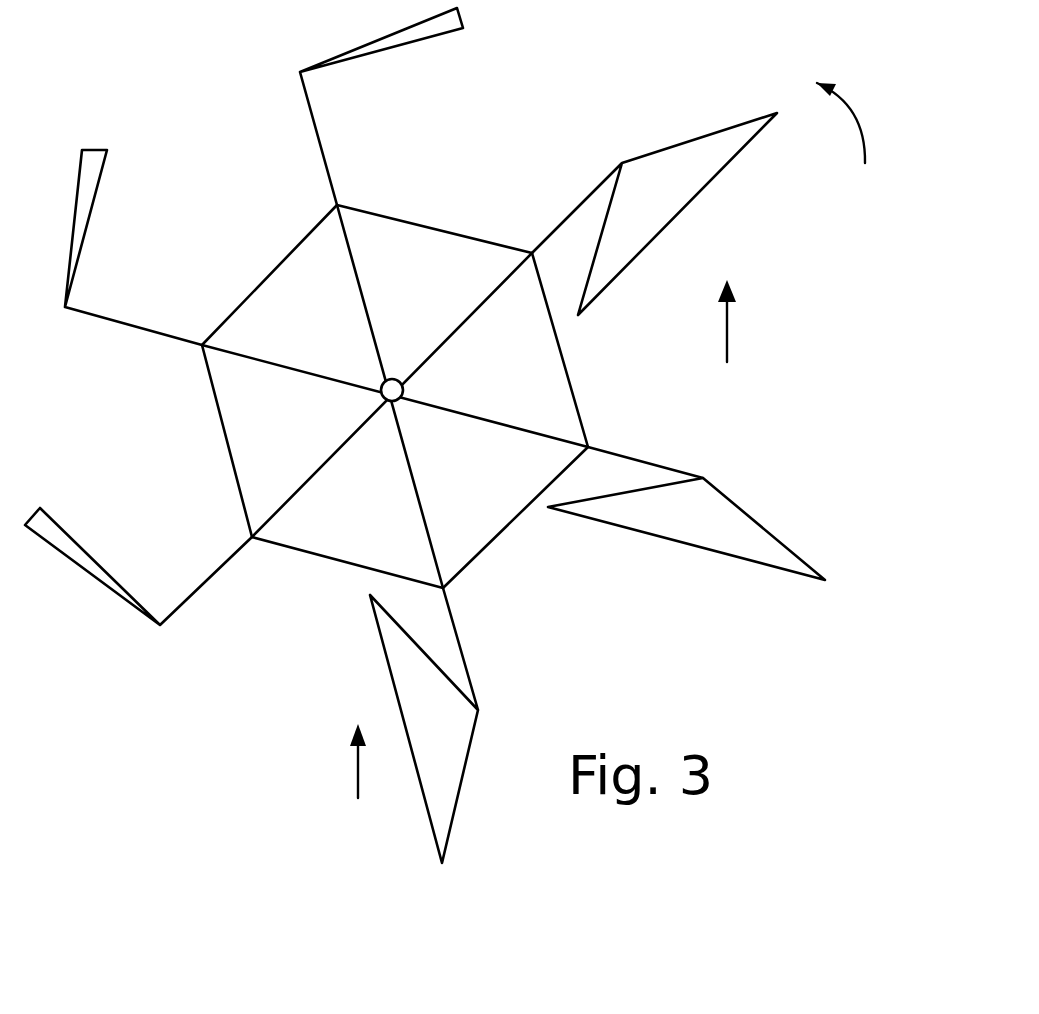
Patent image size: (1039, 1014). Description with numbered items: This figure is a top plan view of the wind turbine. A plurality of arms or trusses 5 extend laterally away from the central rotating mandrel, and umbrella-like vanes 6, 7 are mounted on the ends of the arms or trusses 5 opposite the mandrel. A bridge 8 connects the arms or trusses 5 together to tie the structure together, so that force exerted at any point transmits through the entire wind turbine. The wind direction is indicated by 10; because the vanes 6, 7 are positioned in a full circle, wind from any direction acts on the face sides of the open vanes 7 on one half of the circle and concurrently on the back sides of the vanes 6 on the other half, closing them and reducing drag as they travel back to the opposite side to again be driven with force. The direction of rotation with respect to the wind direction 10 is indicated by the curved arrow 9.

The arm or truss 5 is at (323, 143).
The closed umbrella-like vane 6 is at (68, 198).
The open umbrella-like vane 7 is at (672, 225).
The bridge 8 is at (572, 362).
The curved arrow indicating direction of rotation 9 is at (853, 110).
The wind direction 10 is at (337, 761).